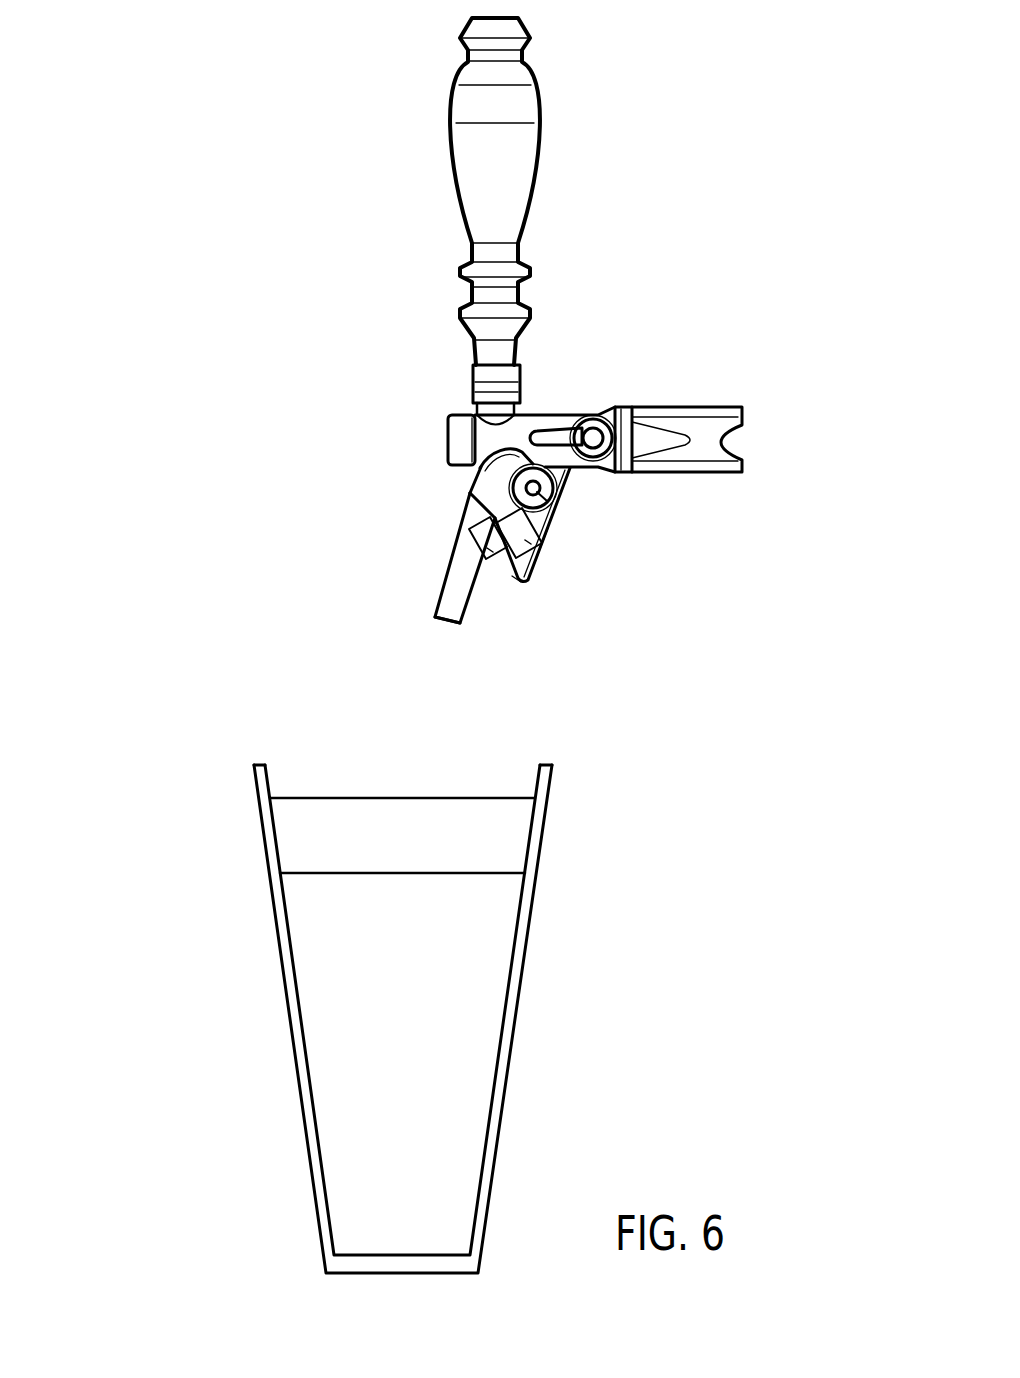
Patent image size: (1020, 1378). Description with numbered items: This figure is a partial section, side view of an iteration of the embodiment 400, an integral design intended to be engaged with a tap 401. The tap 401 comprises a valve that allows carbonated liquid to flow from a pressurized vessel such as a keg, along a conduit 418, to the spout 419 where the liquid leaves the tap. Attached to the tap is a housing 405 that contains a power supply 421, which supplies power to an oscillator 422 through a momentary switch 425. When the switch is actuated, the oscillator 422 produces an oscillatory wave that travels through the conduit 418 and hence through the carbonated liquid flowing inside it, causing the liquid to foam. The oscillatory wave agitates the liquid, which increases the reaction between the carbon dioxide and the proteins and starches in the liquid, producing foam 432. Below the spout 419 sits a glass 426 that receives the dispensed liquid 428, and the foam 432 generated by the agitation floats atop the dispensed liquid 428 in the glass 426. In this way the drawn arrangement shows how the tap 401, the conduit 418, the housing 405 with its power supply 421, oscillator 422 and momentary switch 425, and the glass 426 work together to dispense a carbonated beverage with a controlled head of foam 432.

The beverage dispensing system 400 is at (140, 101).
The tap 401 is at (590, 292).
The housing 405 is at (573, 483).
The conduit 418 is at (703, 443).
The spout 419 is at (437, 643).
The power supply 421 is at (547, 557).
The oscillator 422 is at (517, 578).
The momentary switch 425 is at (565, 498).
The glass 426 is at (297, 1065).
The dispensed liquid 428 is at (325, 940).
The foam 432 is at (383, 830).